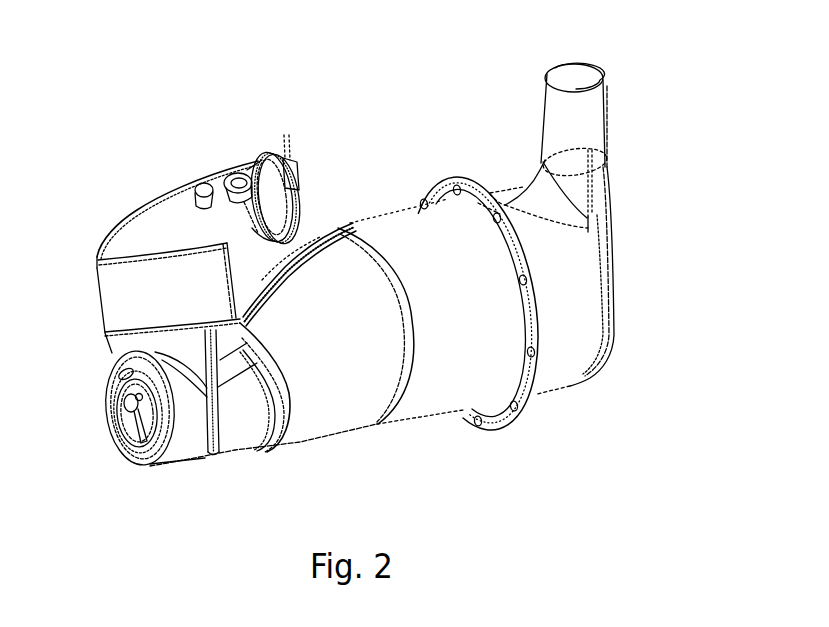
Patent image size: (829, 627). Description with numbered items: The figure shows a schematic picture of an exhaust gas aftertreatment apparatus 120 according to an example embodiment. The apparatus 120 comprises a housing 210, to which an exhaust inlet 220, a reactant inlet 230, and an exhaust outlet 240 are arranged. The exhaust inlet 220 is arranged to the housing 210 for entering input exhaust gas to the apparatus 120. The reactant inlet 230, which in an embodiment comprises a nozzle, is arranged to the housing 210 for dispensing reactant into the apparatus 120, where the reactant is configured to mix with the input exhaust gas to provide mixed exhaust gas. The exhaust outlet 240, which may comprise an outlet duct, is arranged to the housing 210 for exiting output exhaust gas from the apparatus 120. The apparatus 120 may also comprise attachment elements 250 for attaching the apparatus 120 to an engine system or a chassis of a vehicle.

The exhaust gas aftertreatment apparatus 120 is at (118, 138).
The housing 210 is at (323, 229).
The exhaust inlet 220 is at (292, 170).
The reactant inlet 230 is at (122, 410).
The exhaust outlet 240 is at (603, 70).
The attachment elements 250 is at (453, 186).